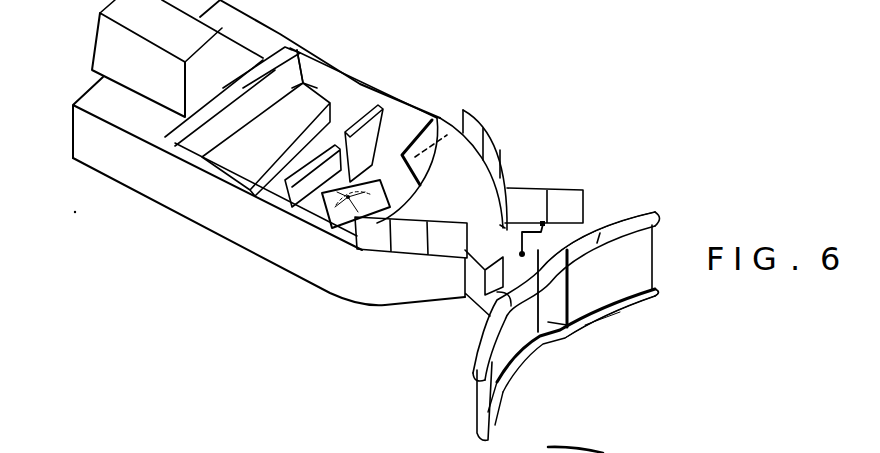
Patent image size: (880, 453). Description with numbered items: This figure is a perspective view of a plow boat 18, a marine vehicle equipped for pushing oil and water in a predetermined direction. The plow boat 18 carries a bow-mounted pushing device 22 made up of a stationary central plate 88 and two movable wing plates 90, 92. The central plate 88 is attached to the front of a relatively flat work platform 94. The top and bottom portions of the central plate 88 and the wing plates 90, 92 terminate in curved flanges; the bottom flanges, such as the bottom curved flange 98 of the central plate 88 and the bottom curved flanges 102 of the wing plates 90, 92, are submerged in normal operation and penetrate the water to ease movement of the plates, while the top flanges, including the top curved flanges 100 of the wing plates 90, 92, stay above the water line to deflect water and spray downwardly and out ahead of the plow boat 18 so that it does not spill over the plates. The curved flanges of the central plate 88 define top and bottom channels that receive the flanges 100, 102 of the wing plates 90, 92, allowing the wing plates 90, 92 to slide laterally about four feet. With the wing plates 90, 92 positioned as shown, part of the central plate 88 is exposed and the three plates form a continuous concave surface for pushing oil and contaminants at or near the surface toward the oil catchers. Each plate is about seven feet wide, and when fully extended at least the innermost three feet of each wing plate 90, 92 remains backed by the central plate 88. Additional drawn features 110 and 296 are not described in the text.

The plow boat 18 is at (353, 61).
The bow-mounted pushing device 22 is at (633, 212).
The stationary central plate 88 is at (550, 322).
The movable wing plate 90 is at (530, 350).
The movable wing plate 92 is at (640, 275).
The work platform 94 is at (505, 228).
The bottom curved flange of central plate 98 is at (583, 311).
The top curved flange of wing plates 100 is at (650, 212).
The bottom curved flange of wing plates 102 is at (628, 298).
The retaining clip 110 is at (544, 222).
The flange end 296 is at (617, 247).